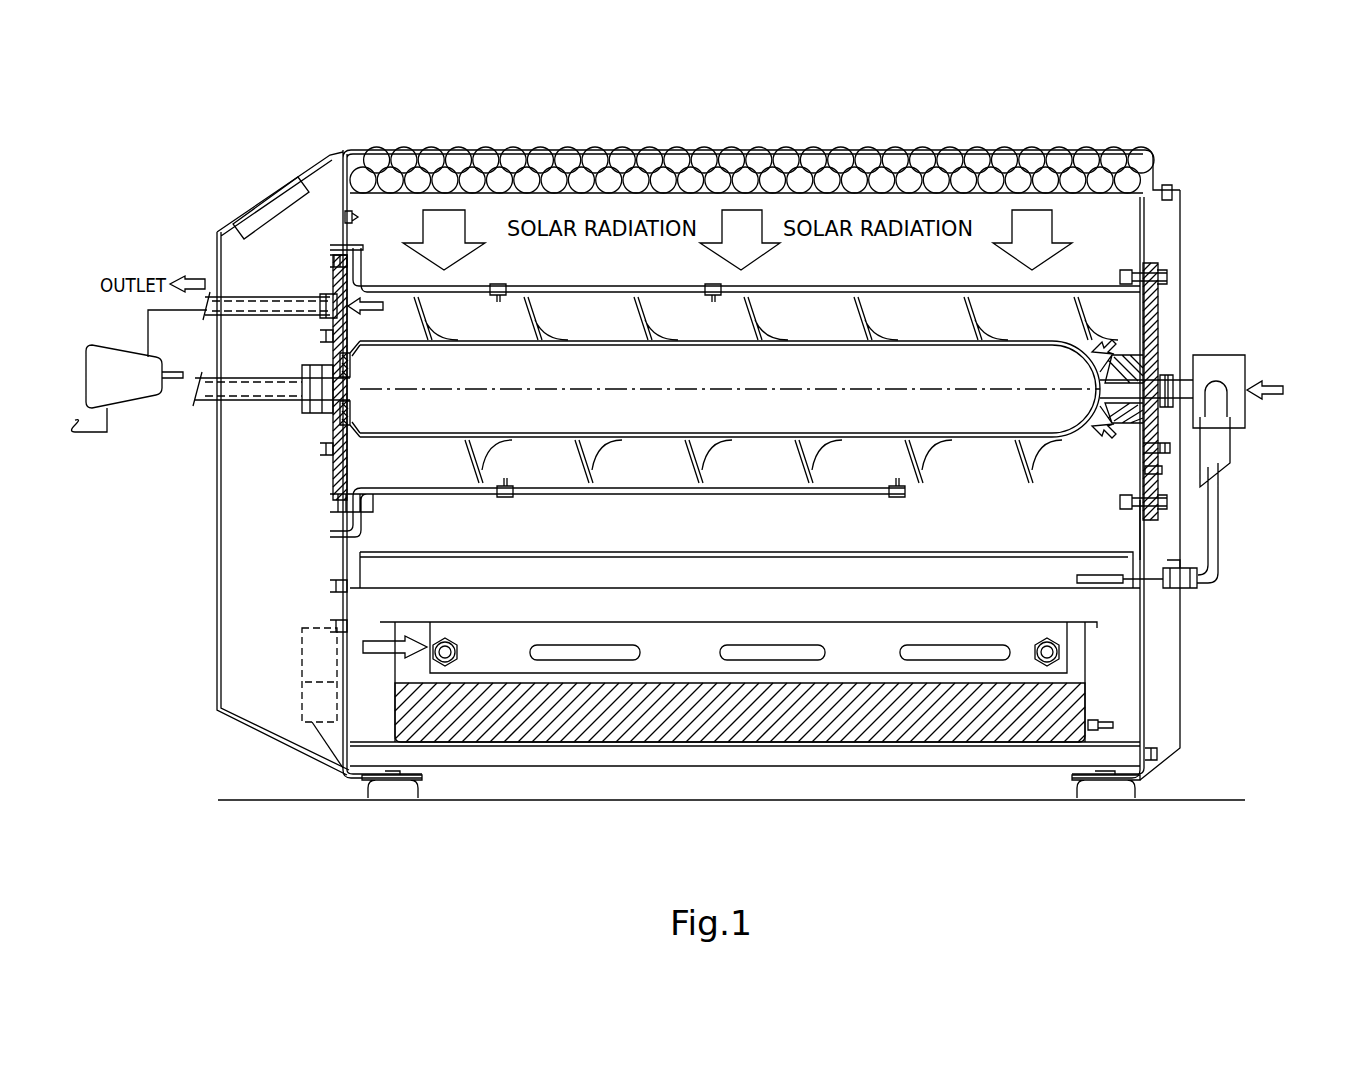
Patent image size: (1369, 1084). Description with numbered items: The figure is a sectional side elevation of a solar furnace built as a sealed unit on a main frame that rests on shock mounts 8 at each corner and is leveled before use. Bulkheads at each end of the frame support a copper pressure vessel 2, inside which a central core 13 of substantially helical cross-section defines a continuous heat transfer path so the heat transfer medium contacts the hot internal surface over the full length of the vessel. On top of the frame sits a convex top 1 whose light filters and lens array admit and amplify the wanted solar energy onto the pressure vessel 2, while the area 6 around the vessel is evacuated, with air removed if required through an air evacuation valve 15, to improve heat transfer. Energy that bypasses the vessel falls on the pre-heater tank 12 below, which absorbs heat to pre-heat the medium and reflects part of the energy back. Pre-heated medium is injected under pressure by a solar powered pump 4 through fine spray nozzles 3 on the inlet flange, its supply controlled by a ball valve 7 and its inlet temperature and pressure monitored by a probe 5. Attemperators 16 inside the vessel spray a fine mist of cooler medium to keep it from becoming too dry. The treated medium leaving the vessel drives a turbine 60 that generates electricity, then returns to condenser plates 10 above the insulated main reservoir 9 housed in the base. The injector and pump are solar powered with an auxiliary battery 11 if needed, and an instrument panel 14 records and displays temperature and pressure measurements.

The convex top 1 is at (1125, 182).
The pressure vessel 2 is at (1053, 288).
The fine spray nozzles 3 is at (1125, 360).
The solar powered pump 4 is at (1214, 362).
The probe 5 is at (1163, 477).
The evacuated area around the pressure vessel 6 is at (1108, 526).
The ball valve 7 is at (1180, 587).
The shock mounts 8 is at (1140, 790).
The main reservoir/condenser box 9 is at (915, 714).
The condenser plates 10 is at (722, 664).
The auxiliary battery 11 is at (300, 632).
The pre-heater tank 12 is at (370, 566).
The central core 13 is at (355, 325).
The instrument panel 14 is at (250, 208).
The air evacuation valve 15 is at (340, 211).
The attemperators 16 is at (498, 286).
The turbine 60 is at (132, 415).